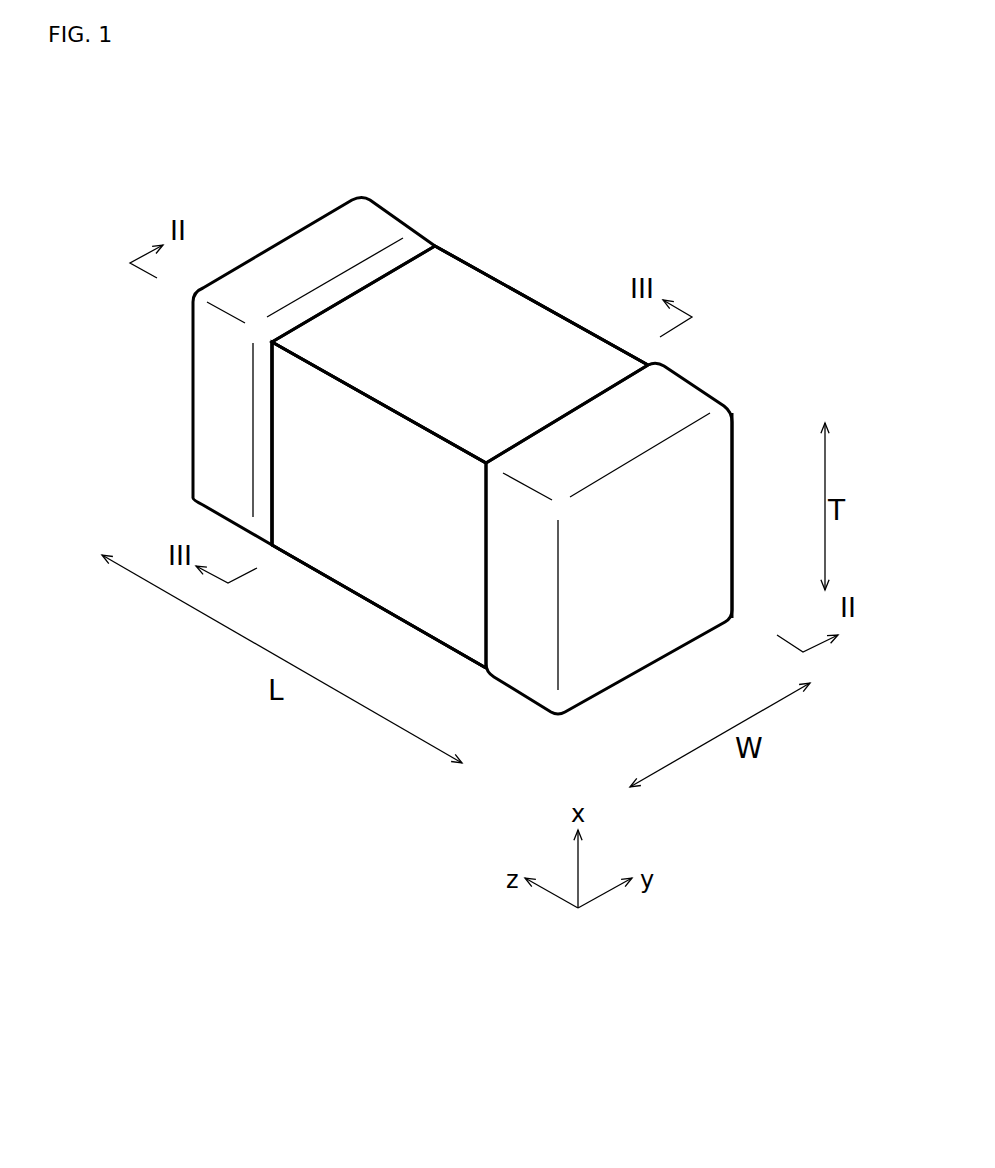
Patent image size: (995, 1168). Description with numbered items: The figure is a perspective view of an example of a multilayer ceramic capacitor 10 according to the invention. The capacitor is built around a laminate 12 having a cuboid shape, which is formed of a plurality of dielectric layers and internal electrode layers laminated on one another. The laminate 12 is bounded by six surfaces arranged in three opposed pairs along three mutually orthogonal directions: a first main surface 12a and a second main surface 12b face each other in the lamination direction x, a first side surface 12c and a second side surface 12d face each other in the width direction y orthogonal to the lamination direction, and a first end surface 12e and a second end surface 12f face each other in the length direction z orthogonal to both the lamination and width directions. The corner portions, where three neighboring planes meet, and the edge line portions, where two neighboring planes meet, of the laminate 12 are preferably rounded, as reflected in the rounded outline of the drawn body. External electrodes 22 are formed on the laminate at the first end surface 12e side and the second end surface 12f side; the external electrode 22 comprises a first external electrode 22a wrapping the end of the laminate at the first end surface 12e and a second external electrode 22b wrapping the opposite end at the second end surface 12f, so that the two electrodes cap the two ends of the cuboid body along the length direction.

The multilayer ceramic capacitor 10 is at (188, 164).
The laminate 12 is at (530, 300).
The first main surface 12a is at (482, 298).
The second main surface 12b is at (442, 603).
The first side surface 12c is at (352, 552).
The second side surface 12d is at (563, 345).
The first end surface 12e is at (303, 270).
The second end surface 12f is at (678, 505).
The external electrodes 22 is at (348, 898).
The first external electrode 22a is at (325, 232).
The second external electrode 22b is at (623, 648).